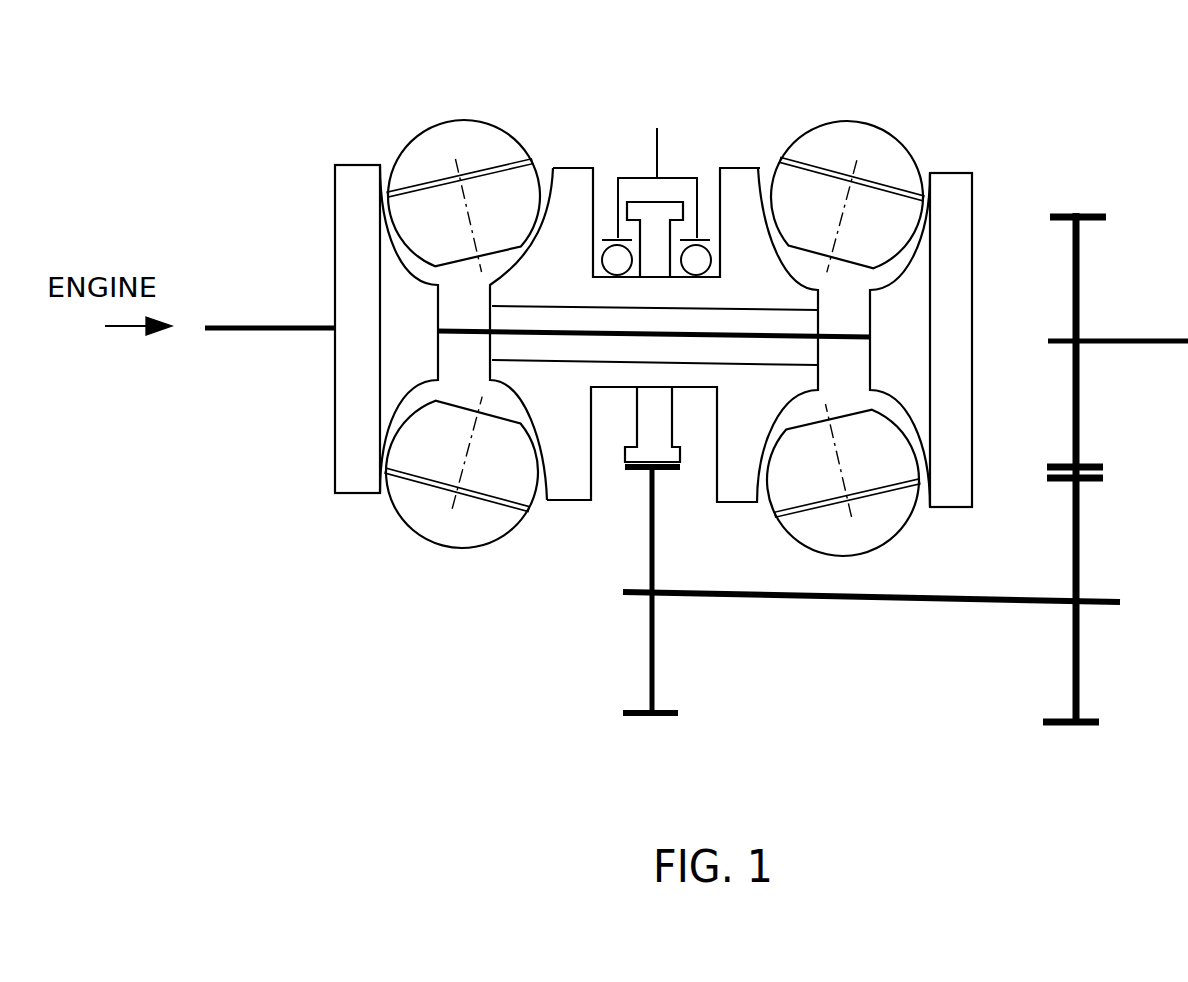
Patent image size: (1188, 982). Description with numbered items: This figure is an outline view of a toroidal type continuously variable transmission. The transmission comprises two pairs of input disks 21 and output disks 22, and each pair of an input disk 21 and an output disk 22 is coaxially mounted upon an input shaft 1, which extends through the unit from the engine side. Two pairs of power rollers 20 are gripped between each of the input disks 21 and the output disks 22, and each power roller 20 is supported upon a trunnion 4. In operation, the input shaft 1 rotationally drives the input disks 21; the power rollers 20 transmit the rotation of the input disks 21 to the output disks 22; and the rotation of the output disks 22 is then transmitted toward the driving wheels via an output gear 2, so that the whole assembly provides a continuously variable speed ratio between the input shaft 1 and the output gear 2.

The input shaft 1 is at (477, 337).
The output gear 2 is at (640, 200).
The trunnion 4 is at (430, 134).
The power roller 20 is at (420, 243).
The input disk 21 is at (353, 165).
The output disk 22 is at (593, 168).